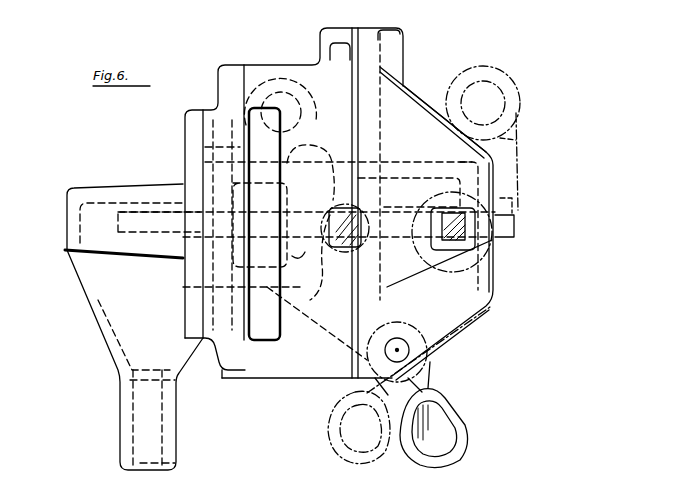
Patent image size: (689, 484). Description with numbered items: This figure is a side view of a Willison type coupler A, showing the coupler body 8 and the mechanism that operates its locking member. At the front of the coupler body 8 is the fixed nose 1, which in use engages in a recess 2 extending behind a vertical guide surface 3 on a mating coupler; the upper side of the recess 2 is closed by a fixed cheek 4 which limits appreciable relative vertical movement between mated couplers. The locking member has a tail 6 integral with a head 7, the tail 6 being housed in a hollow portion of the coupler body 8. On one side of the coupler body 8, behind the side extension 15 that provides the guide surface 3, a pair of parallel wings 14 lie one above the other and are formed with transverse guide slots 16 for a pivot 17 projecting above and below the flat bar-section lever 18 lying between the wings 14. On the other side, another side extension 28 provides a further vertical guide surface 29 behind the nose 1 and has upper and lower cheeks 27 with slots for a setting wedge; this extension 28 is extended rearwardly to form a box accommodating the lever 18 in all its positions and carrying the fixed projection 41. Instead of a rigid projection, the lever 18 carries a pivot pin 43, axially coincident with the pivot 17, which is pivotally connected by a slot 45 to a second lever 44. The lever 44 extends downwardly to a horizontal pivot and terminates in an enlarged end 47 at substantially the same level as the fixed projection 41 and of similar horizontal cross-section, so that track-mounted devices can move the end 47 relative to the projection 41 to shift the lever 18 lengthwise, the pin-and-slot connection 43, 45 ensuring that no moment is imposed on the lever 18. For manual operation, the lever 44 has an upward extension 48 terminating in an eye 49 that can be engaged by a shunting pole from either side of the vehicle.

The fixed nose 1 is at (200, 163).
The recess 2 is at (343, 57).
The vertical guide surface 3 is at (412, 108).
The fixed cheek 4 is at (348, 36).
The tail 6 is at (293, 258).
The head 7 is at (260, 120).
The coupler body 8 is at (205, 147).
The wings 14 is at (512, 207).
The side extension 15 is at (498, 175).
The guide slots 16 is at (505, 277).
The pivot 17 is at (385, 210).
The lever 18 is at (125, 210).
The cheeks 27 is at (143, 186).
The side extension 28 is at (68, 203).
The vertical guide surface 29 is at (90, 228).
The fixed projection 41 is at (125, 438).
The pivot pin 43 is at (336, 252).
The lever 44 is at (423, 380).
The slot 45 is at (345, 255).
The enlarged end 47 is at (335, 433).
The upward extension 48 is at (372, 172).
The eye 49 is at (282, 78).
The coupler A is at (272, 64).